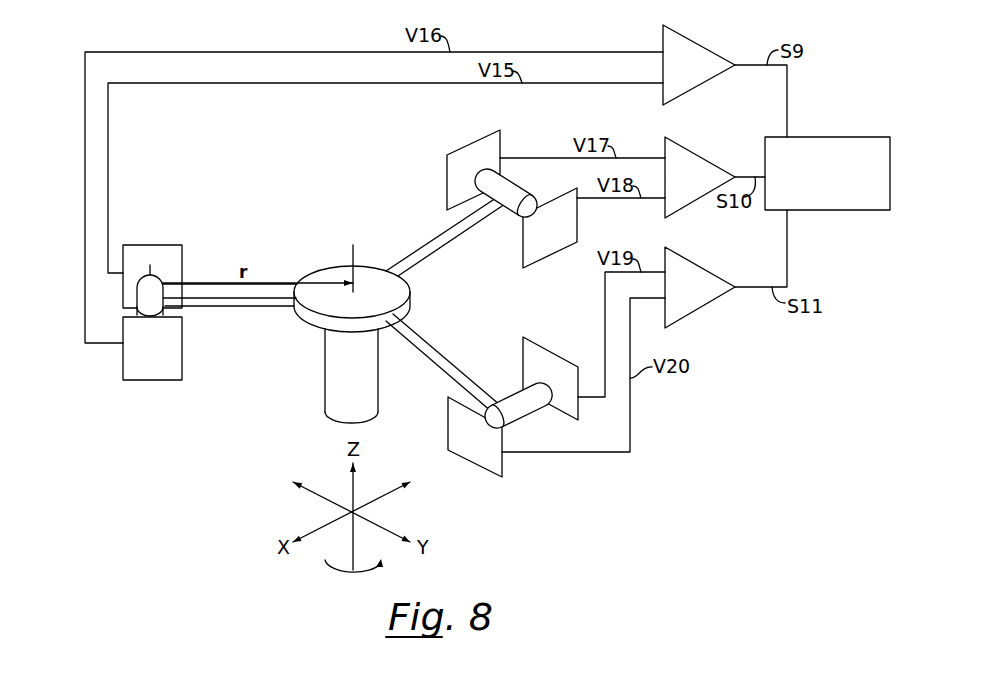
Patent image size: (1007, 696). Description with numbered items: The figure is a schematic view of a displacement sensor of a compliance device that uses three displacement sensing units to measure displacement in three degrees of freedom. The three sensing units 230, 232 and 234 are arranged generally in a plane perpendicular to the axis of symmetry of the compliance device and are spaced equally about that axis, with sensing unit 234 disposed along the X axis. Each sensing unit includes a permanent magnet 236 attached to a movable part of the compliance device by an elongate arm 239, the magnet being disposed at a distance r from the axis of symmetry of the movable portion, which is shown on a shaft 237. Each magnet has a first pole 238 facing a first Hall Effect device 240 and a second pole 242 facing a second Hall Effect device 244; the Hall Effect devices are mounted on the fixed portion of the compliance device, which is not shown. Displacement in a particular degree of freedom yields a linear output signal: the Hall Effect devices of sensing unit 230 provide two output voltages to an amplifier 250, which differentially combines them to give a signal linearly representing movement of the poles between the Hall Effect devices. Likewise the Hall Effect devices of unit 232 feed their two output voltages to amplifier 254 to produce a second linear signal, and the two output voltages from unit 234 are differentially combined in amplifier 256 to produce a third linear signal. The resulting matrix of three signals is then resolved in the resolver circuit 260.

The sensing unit 230 is at (196, 264).
The sensing unit 232 is at (432, 192).
The sensing unit 234 is at (513, 356).
The permanent magnet 236 is at (138, 290).
The shaft 237 is at (325, 395).
The first pole 238 is at (142, 313).
The elongate arm 239 is at (223, 307).
The first Hall Effect device 240 is at (123, 368).
The second pole 242 is at (140, 277).
The second Hall Effect device 244 is at (163, 243).
The amplifier 250 is at (693, 38).
The amplifier 254 is at (690, 152).
The amplifier 256 is at (690, 267).
The resolver circuit 260 is at (836, 137).